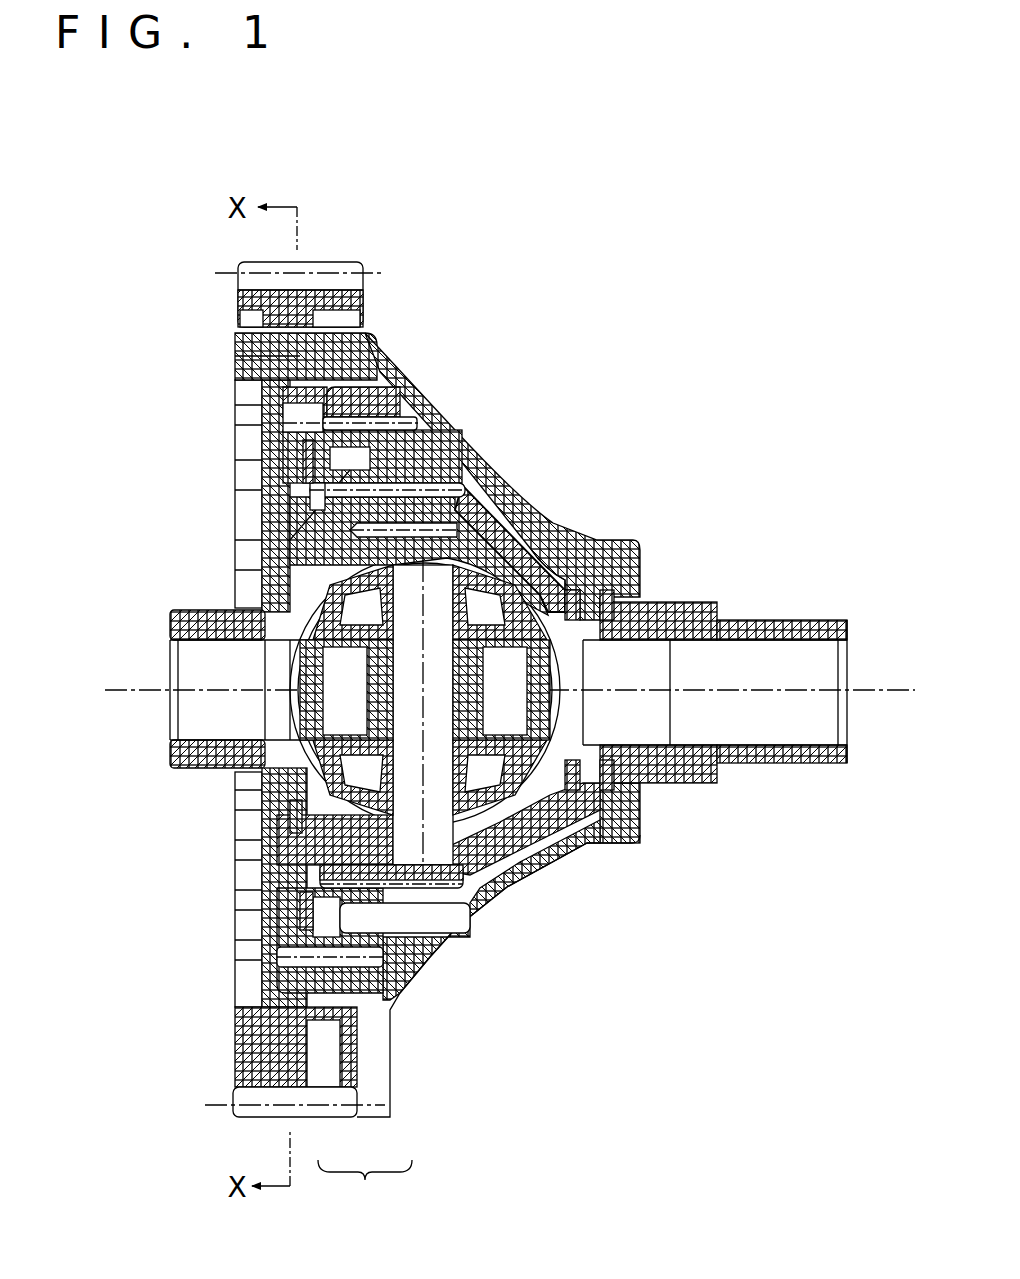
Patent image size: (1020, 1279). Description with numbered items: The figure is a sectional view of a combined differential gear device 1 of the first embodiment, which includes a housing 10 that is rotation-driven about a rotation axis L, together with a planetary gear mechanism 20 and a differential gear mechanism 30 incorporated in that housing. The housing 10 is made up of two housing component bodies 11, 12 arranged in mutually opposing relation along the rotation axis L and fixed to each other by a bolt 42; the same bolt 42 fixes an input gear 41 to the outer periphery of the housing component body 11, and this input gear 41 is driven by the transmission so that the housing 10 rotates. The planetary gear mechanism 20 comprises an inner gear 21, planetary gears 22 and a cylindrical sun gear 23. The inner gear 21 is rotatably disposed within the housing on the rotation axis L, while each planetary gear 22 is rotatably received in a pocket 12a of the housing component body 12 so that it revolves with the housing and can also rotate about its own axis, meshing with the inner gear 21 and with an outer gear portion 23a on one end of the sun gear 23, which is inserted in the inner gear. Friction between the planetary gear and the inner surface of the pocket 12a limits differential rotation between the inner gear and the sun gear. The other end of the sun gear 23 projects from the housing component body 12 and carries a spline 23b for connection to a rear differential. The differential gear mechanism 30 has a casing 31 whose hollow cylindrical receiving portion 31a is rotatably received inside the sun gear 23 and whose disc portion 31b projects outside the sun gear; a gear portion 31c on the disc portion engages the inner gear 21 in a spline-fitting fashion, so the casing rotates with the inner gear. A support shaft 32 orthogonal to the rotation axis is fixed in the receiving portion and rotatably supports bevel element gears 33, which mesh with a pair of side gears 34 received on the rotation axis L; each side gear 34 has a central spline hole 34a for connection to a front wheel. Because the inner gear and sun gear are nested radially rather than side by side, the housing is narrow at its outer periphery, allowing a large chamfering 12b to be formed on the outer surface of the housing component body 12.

The combined differential gear device 1 is at (580, 324).
The housing 10 is at (365, 1187).
The housing component body 11 is at (330, 1085).
The housing component body 12 is at (392, 1120).
The pocket 12a is at (388, 380).
The chamfering 12b is at (505, 510).
The planetary gear mechanism 20 is at (405, 372).
The inner gear 21 is at (362, 392).
The planetary gear 22 is at (420, 420).
The sun gear 23 is at (465, 498).
The outer gear portion 23a is at (428, 486).
The spline 23b is at (790, 618).
The differential gear mechanism 30 is at (298, 772).
The casing 31 is at (278, 530).
The receiving portion 31a is at (533, 567).
The disc portion 31b is at (293, 470).
The gear portion 31c is at (297, 397).
The support shaft 32 is at (395, 873).
The element gear 33 is at (375, 575).
The side gear 34 is at (330, 623).
The spline hole 34a is at (345, 742).
The input gear 41 is at (315, 262).
The bolt 42 is at (235, 358).
The rotation axis L is at (870, 690).